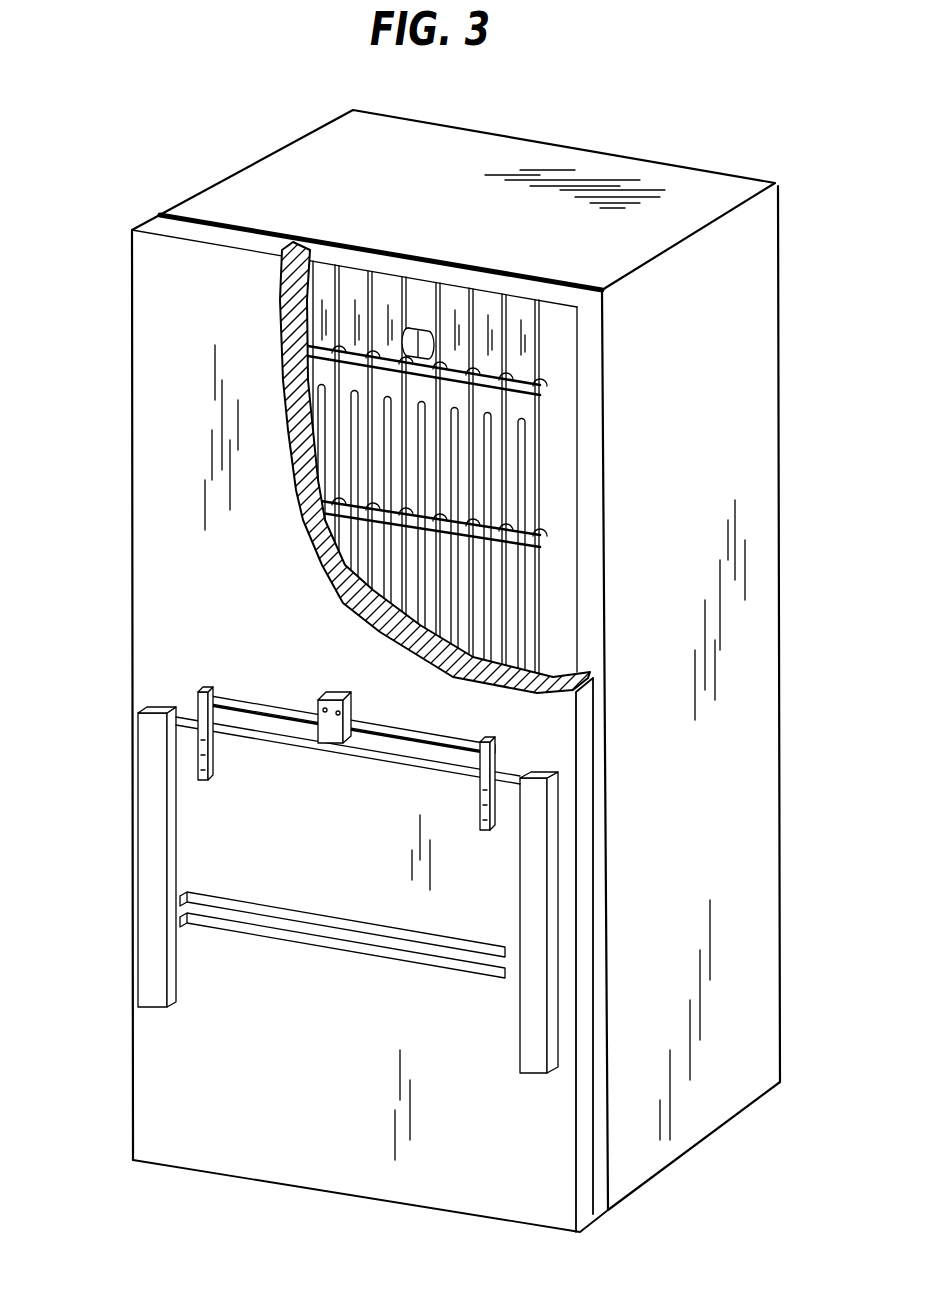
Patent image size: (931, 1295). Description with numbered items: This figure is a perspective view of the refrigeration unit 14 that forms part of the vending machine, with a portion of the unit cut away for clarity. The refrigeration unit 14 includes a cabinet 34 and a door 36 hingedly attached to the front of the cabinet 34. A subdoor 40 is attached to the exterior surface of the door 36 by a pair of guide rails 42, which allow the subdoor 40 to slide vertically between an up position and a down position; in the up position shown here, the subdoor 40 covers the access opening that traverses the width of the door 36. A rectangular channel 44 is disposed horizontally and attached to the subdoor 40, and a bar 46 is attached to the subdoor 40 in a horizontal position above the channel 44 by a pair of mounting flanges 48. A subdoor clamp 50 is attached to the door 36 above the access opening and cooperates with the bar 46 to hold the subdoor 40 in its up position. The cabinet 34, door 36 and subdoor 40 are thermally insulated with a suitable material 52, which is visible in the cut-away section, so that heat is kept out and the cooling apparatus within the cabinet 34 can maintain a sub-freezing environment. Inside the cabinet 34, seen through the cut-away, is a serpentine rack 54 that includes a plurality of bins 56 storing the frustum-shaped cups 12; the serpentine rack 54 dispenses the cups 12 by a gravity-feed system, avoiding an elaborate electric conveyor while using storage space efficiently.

The cup 12 is at (418, 328).
The refrigeration unit 14 is at (786, 1090).
The cabinet 34 is at (780, 443).
The door 36 is at (152, 361).
The subdoor 40 is at (351, 854).
The guide rail 42 is at (150, 967).
The rectangular channel 44 is at (345, 944).
The bar 46 is at (277, 707).
The mounting flange 48 is at (205, 690).
The subdoor clamp 50 is at (337, 693).
The thermally insulating material 52 is at (294, 243).
The serpentine rack 54 is at (560, 437).
The bin 56 is at (543, 355).